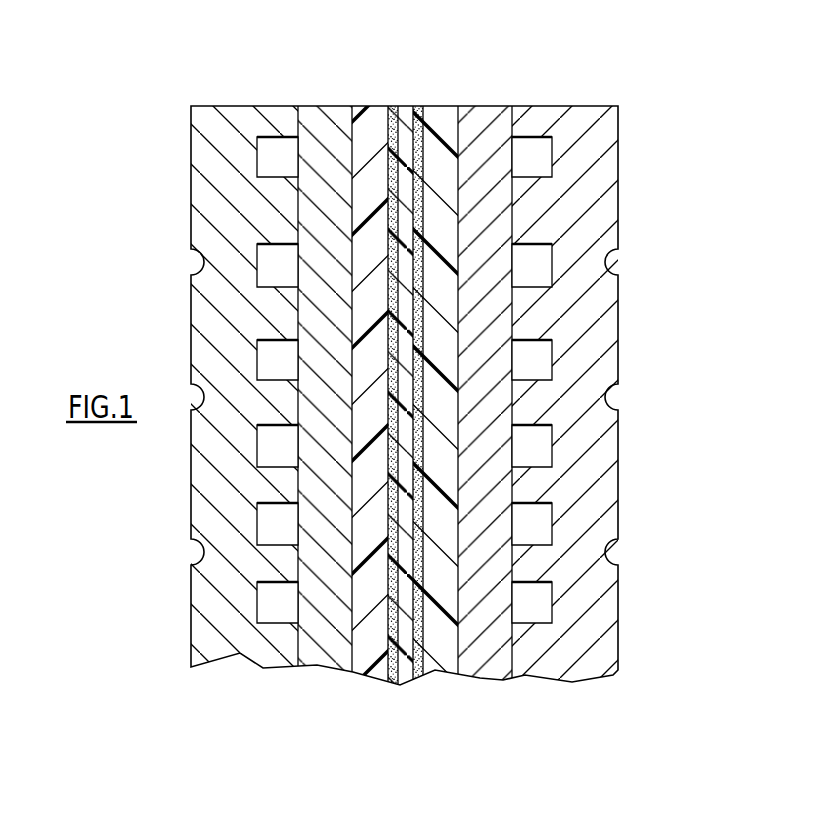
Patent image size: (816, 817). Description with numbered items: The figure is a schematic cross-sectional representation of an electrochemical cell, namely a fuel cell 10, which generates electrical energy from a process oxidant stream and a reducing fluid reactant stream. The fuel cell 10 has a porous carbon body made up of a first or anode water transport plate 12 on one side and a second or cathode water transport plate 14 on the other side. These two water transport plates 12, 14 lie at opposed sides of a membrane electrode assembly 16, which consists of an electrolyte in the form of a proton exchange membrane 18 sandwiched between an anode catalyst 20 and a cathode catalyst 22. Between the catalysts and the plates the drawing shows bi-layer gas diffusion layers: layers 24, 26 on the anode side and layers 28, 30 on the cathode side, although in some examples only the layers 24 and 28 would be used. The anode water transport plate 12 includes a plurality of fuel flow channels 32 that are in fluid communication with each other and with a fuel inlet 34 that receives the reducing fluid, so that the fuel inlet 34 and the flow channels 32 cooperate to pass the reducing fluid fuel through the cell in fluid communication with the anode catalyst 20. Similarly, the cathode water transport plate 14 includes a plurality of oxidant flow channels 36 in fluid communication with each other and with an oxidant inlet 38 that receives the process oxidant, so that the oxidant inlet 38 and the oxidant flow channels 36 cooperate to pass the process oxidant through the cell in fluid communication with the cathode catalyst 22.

The fuel cell 10 is at (566, 48).
The anode water transport plate 12 is at (252, 650).
The cathode water transport plate 14 is at (560, 663).
The membrane electrode assembly 16 is at (403, 412).
The proton exchange membrane 18 is at (403, 677).
The anode catalyst 20 is at (392, 677).
The cathode catalyst 22 is at (422, 678).
The gas diffusion layer 24 is at (317, 657).
The gas diffusion layer 26 is at (363, 658).
The gas diffusion layer 28 is at (497, 670).
The gas diffusion layer 30 is at (443, 660).
The fuel flow channels 32 is at (262, 160).
The fuel inlet 34 is at (267, 112).
The oxidant flow channels 36 is at (555, 262).
The oxidant inlet 38 is at (540, 112).